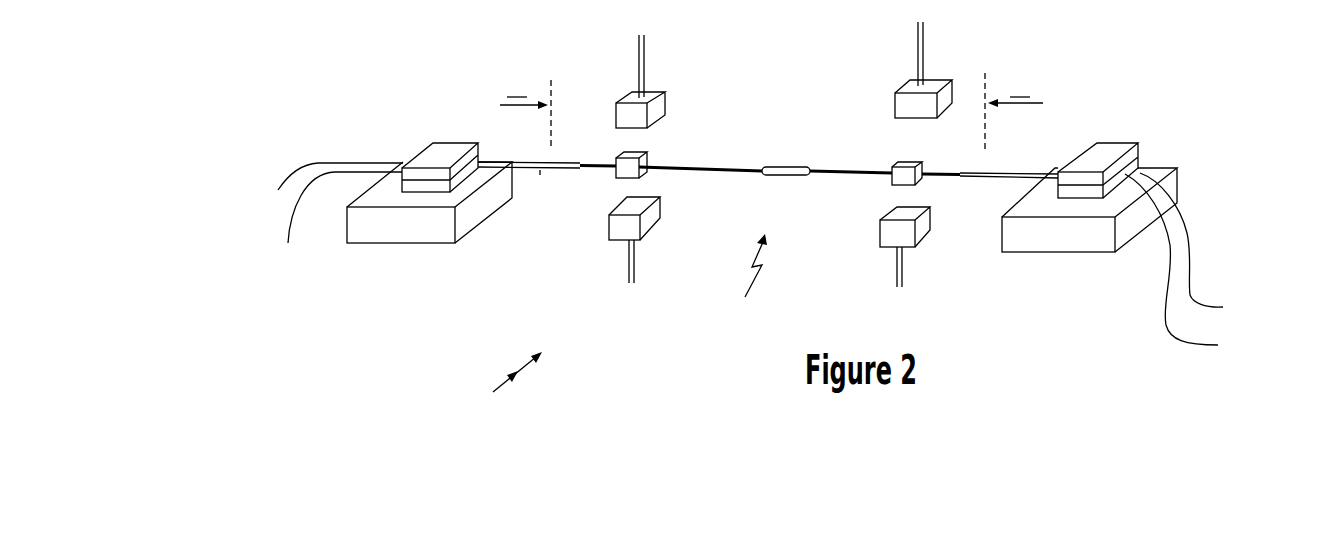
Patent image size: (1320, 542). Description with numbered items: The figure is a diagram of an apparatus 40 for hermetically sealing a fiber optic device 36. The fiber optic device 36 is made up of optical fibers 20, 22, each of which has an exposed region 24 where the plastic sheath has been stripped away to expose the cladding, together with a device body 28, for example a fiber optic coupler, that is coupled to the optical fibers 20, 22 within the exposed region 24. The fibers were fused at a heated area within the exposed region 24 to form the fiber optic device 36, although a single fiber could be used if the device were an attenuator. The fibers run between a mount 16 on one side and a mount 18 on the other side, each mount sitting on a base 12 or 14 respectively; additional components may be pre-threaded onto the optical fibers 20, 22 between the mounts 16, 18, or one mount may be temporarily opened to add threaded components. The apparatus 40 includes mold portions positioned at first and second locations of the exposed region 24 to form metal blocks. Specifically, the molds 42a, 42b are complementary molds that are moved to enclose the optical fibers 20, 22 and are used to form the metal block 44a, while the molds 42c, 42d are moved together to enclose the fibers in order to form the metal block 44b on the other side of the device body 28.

The first base 12 is at (402, 235).
The second base 14 is at (1038, 245).
The mount 16 is at (437, 152).
The mount 18 is at (1113, 148).
The optical fiber 20 is at (533, 162).
The optical fiber 22 is at (540, 172).
The exposed region 24 is at (771, 112).
The device body 28 is at (783, 165).
The fiber optic device 36 is at (750, 277).
The apparatus 40 is at (507, 382).
The mold 42a is at (666, 100).
The mold 42b is at (660, 214).
The mold 42c is at (910, 85).
The mold 42d is at (880, 233).
The metal block 44a is at (647, 158).
The metal block 44b is at (903, 163).